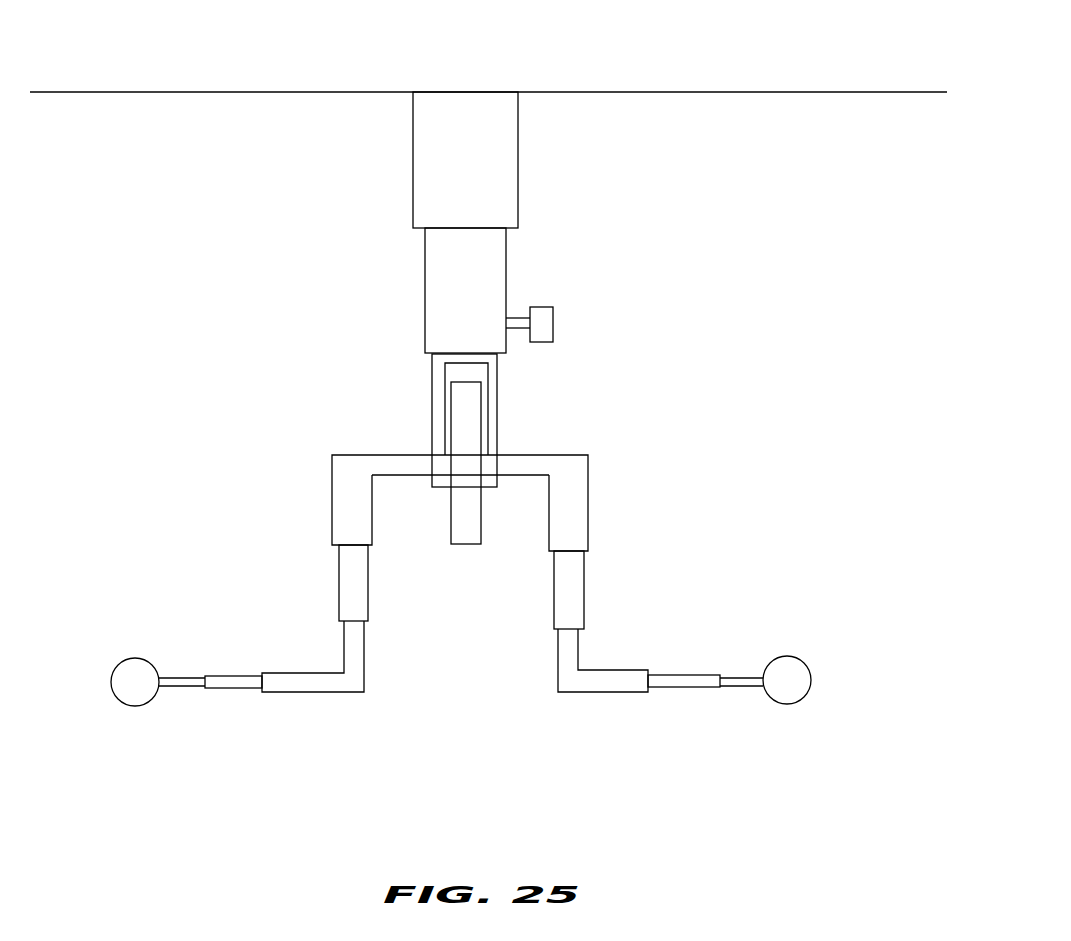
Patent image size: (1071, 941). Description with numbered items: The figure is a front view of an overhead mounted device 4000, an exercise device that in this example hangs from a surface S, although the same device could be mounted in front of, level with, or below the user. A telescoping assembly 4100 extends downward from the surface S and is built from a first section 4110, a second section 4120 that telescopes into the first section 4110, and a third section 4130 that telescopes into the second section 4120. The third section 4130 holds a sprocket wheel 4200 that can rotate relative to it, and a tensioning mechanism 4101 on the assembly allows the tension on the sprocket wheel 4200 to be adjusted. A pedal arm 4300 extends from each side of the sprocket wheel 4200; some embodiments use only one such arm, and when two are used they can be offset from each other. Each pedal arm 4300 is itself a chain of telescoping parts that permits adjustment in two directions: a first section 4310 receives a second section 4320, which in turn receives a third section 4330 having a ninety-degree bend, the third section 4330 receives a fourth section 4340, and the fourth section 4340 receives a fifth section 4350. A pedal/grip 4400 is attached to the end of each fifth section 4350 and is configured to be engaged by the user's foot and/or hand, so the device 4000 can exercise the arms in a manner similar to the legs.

The surface S is at (791, 92).
The overhead mounted device 4000 is at (768, 236).
The telescoping assembly 4100 is at (482, 289).
The tensioning mechanism 4101 is at (542, 326).
The first section 4110 is at (413, 167).
The second section 4120 is at (425, 288).
The third section 4130 is at (432, 372).
The sprocket wheel 4200 is at (472, 420).
The pedal arm 4300 is at (460, 501).
The first section 4310 is at (345, 519).
The second section 4320 is at (348, 587).
The third section 4330 is at (345, 653).
The fourth section 4340 is at (225, 686).
The fifth section 4350 is at (175, 688).
The pedal/grip 4400 is at (124, 682).